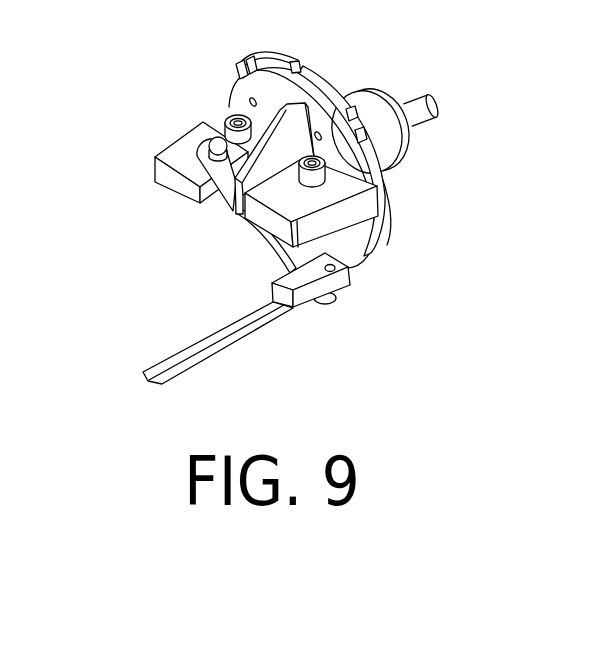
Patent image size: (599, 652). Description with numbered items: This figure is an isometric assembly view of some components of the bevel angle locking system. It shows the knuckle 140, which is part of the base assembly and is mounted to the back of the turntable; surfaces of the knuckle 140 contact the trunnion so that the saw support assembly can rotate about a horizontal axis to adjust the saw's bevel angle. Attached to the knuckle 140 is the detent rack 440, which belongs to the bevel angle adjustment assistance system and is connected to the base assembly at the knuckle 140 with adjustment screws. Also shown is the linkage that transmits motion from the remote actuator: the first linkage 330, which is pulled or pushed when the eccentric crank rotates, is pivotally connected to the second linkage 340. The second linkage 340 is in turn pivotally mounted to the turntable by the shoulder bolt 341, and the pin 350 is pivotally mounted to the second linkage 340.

The knuckle 140 is at (153, 169).
The first linkage 330 is at (263, 333).
The second linkage 340 is at (270, 257).
The shoulder bolt 341 is at (206, 141).
The pin 350 is at (413, 94).
The detent rack 440 is at (288, 54).